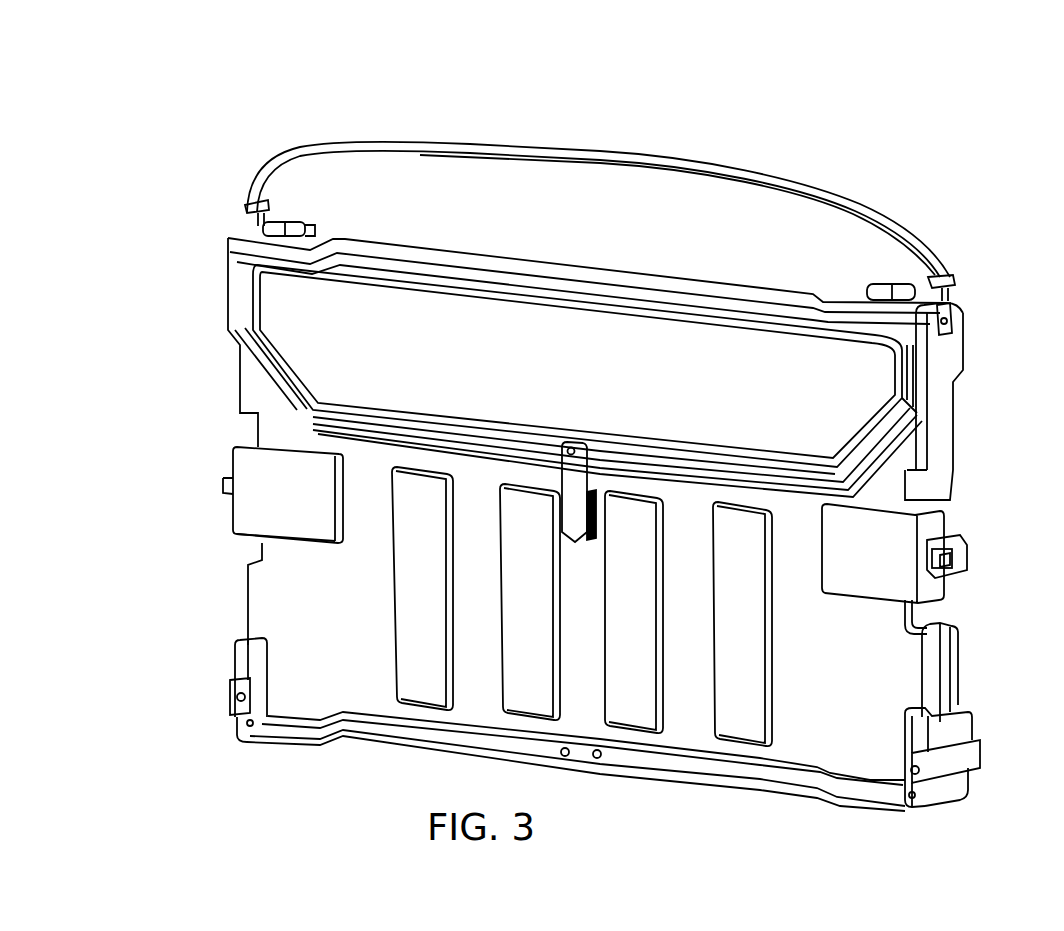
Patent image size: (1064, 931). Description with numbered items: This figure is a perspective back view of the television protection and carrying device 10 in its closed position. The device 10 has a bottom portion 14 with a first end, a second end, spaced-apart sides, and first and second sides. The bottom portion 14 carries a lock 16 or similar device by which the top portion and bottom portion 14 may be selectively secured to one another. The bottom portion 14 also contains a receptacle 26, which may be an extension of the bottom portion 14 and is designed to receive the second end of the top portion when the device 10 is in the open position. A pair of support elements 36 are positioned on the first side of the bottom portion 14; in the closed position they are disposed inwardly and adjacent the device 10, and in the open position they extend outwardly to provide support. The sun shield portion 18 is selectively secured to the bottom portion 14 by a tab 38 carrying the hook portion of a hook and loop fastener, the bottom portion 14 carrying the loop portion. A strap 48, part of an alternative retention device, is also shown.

The television protection and carrying device 10 is at (672, 125).
The bottom portion 14 is at (283, 590).
The lock 16 is at (943, 557).
The sun shield portion 18 is at (293, 307).
The receptacle 26 is at (878, 525).
The support elements 36 is at (963, 765).
The tab 38 is at (572, 483).
The strap 48 is at (843, 200).